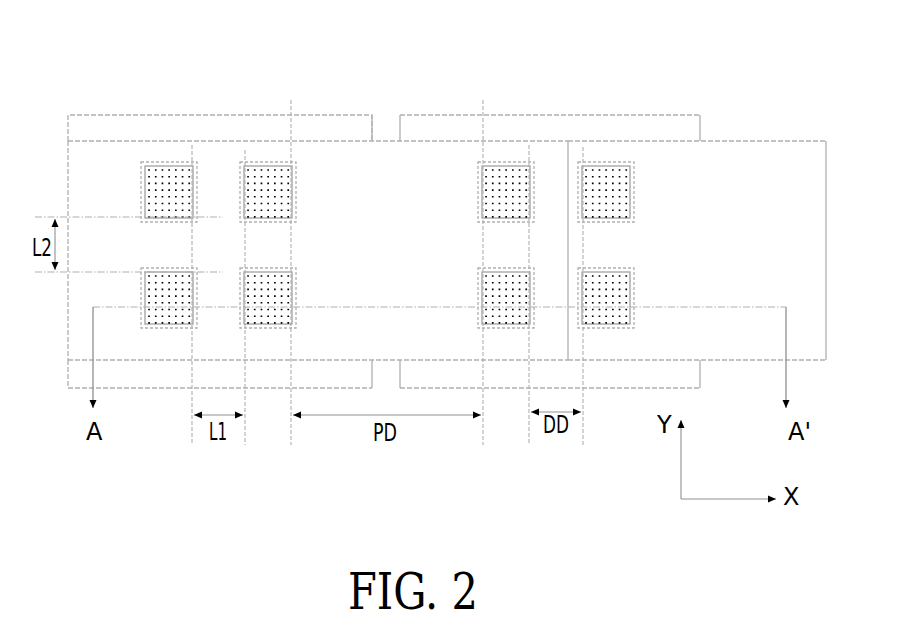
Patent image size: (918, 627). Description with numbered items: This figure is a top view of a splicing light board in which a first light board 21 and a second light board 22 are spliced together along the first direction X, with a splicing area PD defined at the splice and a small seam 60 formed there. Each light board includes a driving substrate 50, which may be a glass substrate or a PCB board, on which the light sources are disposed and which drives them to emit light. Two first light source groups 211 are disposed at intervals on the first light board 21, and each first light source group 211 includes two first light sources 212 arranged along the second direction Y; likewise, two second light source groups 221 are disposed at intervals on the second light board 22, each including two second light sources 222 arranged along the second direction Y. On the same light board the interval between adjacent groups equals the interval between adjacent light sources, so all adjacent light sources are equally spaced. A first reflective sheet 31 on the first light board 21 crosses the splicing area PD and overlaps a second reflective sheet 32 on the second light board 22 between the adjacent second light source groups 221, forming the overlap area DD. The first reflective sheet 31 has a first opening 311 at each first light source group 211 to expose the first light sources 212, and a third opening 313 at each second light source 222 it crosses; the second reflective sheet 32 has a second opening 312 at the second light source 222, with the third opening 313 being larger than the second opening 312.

The first light board 21 is at (360, 43).
The second light board 22 is at (638, 43).
The first reflective sheet 31 is at (84, 152).
The second reflective sheet 32 is at (745, 152).
The driving substrate 50 is at (333, 135).
The seam 60 is at (385, 124).
The first light source group 211 is at (153, 162).
The first light source 212 is at (257, 177).
The second light source group 221 is at (497, 167).
The second light source 222 is at (598, 173).
The first opening 311 is at (157, 334).
The second opening 312 is at (612, 336).
The third opening 313 is at (498, 337).